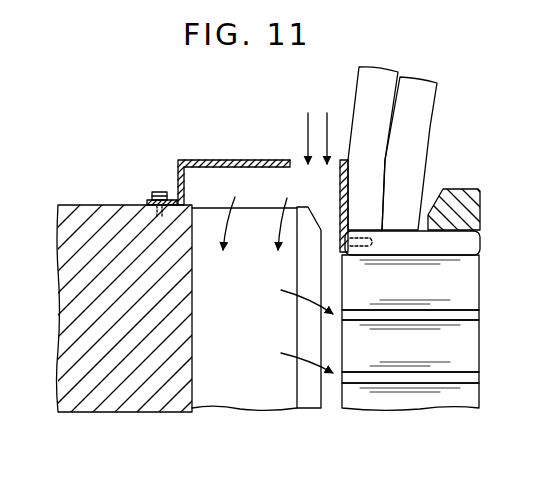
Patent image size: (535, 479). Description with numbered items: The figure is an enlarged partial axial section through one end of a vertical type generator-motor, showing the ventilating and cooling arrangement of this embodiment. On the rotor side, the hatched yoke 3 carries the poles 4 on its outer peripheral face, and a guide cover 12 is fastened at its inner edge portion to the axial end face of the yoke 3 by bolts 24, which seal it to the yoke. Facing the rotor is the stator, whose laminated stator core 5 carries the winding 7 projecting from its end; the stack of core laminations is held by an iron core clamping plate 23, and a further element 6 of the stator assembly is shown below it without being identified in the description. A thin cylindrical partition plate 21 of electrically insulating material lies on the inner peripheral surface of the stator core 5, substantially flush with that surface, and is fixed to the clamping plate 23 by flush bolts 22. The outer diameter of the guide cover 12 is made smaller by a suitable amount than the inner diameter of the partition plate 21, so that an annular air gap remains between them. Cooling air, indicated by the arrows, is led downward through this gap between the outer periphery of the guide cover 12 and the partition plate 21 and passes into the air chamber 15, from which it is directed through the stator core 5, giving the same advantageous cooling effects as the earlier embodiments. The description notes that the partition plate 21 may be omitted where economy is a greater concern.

The yoke 3 is at (140, 403).
The poles 4 is at (307, 400).
The stator core 5 is at (380, 400).
The bottom plate 6 is at (447, 375).
The winding 7 is at (430, 128).
The guide cover 12 is at (262, 167).
The air chamber 15 is at (215, 167).
The partition plate 21 is at (337, 160).
The flush bolts 22 is at (342, 242).
The iron core clamping plate 23 is at (423, 228).
The bolts 24 is at (156, 191).